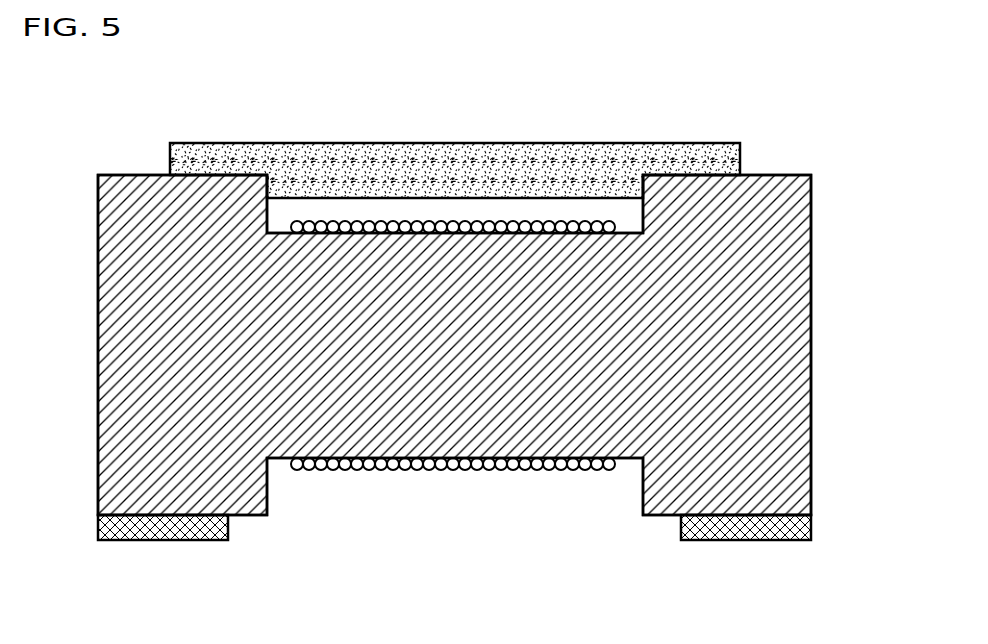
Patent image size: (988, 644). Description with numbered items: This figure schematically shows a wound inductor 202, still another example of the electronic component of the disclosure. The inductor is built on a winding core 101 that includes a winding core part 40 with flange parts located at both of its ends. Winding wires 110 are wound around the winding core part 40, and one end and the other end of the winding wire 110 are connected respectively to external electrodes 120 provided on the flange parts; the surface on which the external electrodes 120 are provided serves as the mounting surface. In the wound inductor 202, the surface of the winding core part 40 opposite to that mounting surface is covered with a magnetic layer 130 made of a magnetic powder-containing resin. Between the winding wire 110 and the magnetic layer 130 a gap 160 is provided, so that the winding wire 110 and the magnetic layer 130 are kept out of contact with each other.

The wound inductor 202 is at (106, 137).
The winding core 101 is at (785, 312).
The winding core part 40 is at (476, 410).
The magnetic layer 130 is at (562, 165).
The gap 160 is at (413, 212).
The winding wire 110 is at (398, 468).
The external electrodes 120 is at (152, 532).